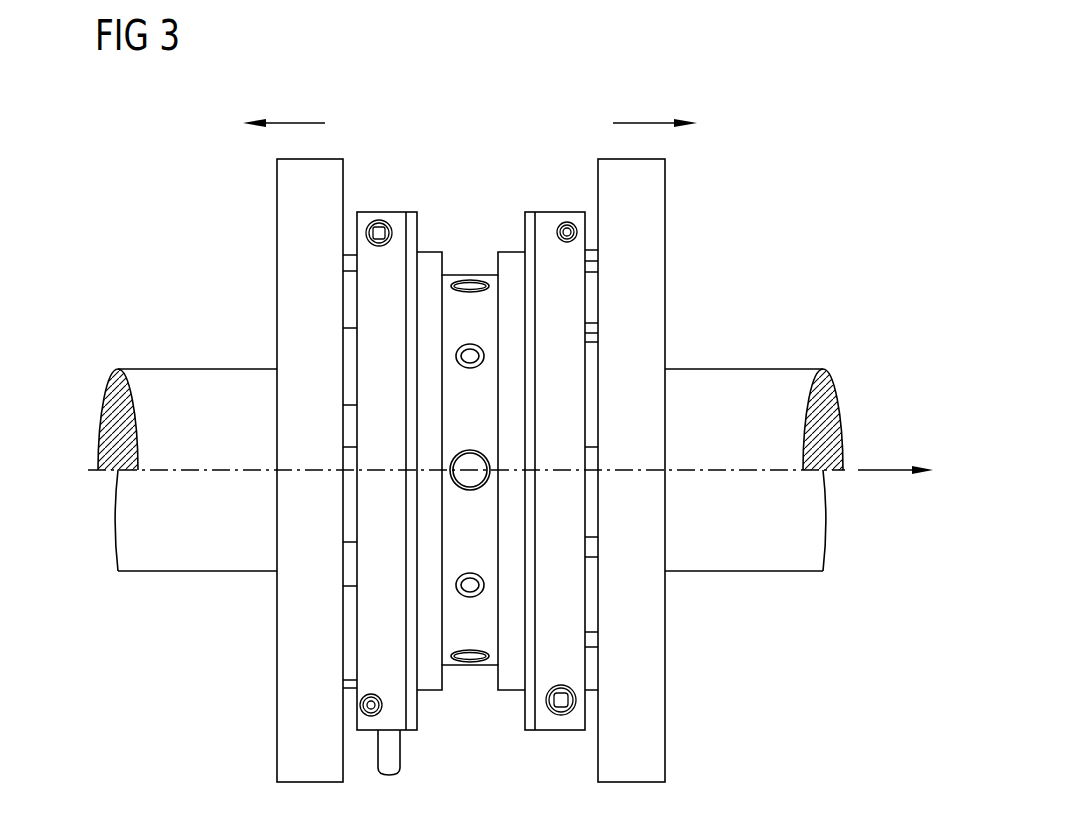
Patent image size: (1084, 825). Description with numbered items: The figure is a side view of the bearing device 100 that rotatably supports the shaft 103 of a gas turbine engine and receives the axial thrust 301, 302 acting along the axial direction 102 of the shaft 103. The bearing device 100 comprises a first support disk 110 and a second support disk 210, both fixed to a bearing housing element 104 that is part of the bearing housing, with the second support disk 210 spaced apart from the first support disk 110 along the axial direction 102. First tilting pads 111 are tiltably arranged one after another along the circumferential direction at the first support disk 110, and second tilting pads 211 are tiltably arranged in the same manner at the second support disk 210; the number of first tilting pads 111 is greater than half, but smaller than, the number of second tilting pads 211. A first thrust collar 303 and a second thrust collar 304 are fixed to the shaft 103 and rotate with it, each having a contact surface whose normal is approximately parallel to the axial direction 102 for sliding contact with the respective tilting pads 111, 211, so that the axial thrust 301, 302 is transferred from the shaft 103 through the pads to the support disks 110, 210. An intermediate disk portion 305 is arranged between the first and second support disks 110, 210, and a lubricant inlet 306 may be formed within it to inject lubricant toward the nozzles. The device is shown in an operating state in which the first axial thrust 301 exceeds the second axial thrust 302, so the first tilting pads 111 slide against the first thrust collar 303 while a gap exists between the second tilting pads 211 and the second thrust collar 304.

The bearing device 100 is at (764, 76).
The axial direction 102 is at (885, 468).
The shaft 103 is at (778, 561).
The bearing housing element 104 is at (390, 753).
The first support disk 110 is at (398, 218).
The first tilting pads 111 is at (348, 258).
The second support disk 210 is at (548, 218).
The second tilting pads 211 is at (592, 295).
The first axial thrust 301 is at (297, 120).
The second axial thrust 302 is at (643, 122).
The first thrust collar 303 is at (287, 216).
The second thrust collar 304 is at (657, 222).
The intermediate disk portion 305 is at (445, 275).
The lubricant inlet 306 is at (472, 662).